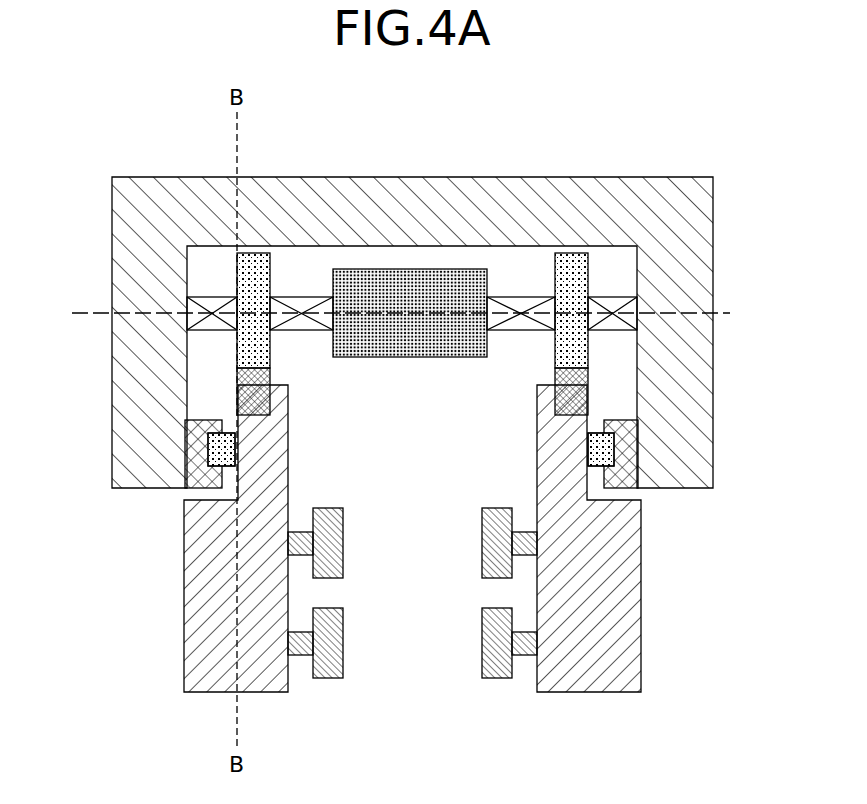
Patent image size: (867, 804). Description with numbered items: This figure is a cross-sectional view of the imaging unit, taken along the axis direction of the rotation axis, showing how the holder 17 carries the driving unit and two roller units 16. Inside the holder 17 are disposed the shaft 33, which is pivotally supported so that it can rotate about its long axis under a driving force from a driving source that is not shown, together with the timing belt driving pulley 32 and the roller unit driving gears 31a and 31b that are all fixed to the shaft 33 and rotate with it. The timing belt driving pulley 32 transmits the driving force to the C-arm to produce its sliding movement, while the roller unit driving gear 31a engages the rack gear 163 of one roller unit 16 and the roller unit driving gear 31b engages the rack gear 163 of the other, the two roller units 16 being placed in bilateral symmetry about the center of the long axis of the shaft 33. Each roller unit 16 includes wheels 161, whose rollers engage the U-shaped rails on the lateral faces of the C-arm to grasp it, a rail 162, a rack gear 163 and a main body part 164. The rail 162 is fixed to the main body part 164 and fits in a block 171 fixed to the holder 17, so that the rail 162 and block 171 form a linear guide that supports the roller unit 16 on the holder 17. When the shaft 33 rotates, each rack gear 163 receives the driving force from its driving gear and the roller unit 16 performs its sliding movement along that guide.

The roller unit 16 is at (413, 586).
The holder 17 is at (112, 186).
The roller unit driving gear 31a is at (253, 253).
The roller unit driving gear 31b is at (572, 253).
The timing belt driving pulley 32 is at (412, 268).
The shaft 33 is at (514, 331).
The wheels 161 is at (345, 500).
The rail 162 is at (236, 449).
The rack gear 163 is at (271, 385).
The main body part 164 is at (184, 598).
The block 171 is at (206, 420).